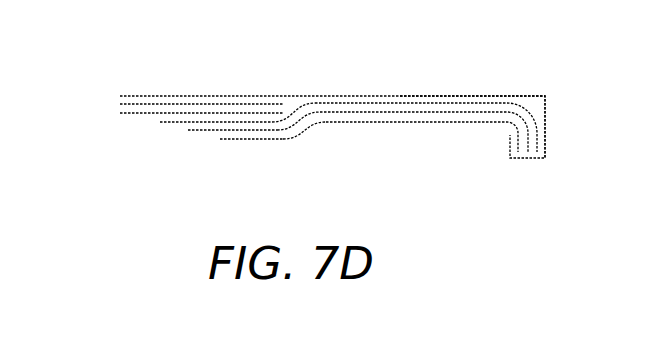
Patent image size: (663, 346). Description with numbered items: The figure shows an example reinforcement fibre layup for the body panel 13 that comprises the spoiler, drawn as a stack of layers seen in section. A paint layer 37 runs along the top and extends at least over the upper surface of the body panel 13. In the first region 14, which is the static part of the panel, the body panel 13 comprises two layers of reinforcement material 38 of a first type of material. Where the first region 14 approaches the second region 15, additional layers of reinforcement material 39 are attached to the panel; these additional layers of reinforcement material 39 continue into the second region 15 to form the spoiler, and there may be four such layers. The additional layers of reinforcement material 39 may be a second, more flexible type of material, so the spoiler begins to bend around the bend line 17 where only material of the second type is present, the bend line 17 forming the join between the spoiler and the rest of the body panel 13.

The two layers of reinforcement material 38 is at (110, 101).
The body panel 13 is at (125, 136).
The first region 14 is at (160, 163).
The additional layers of reinforcement material 39 is at (235, 148).
The bend line 17 is at (321, 111).
The paint layer 37 is at (431, 94).
The second region 15 is at (433, 164).